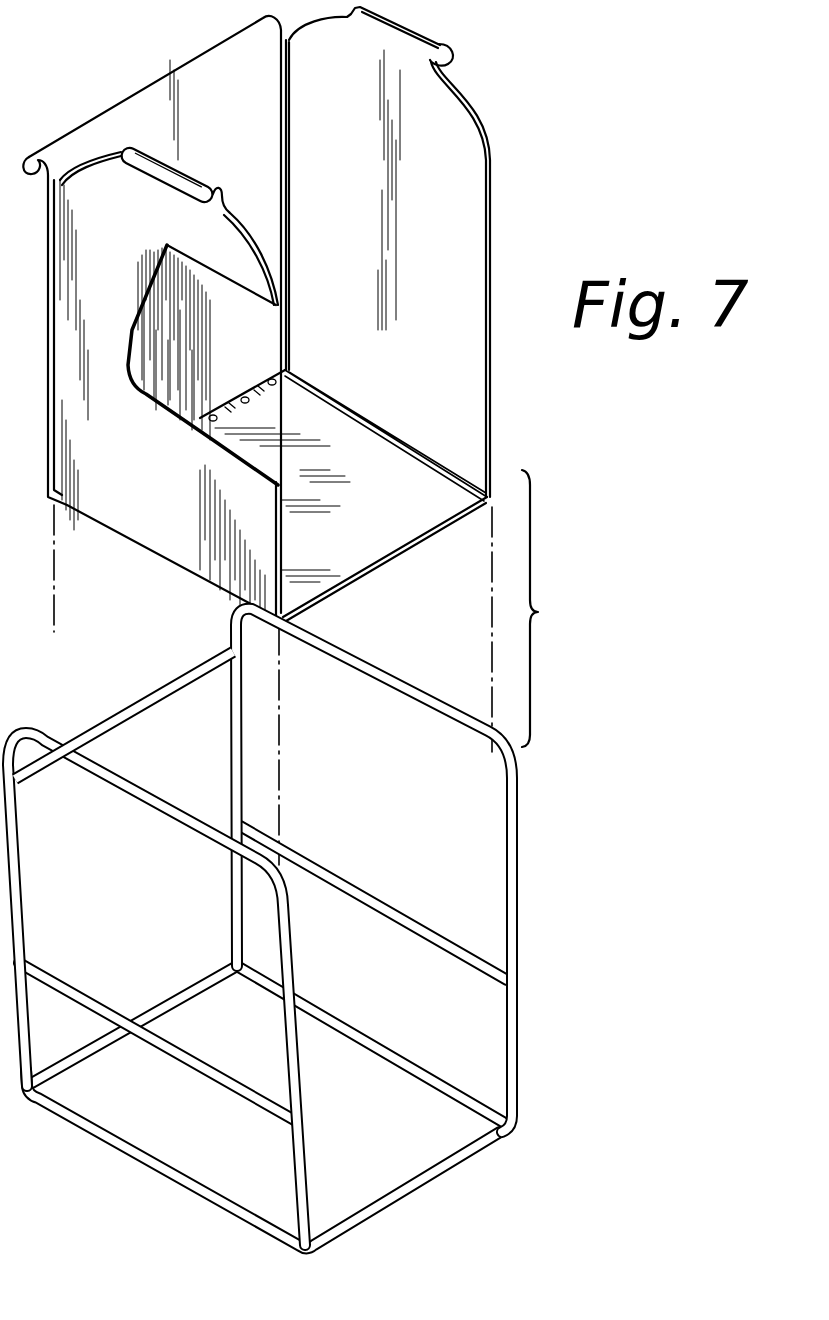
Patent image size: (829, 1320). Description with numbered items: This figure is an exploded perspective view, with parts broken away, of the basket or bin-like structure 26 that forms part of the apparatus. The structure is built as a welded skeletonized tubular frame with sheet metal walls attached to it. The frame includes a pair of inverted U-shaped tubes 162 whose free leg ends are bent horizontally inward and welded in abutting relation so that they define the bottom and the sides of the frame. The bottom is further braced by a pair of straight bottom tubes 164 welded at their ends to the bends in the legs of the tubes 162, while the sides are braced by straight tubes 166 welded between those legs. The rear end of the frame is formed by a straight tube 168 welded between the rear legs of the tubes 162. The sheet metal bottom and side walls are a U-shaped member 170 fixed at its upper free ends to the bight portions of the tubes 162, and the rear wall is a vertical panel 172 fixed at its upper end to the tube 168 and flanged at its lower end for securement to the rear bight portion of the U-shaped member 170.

The bin-like structure 26 is at (570, 594).
The inverted U-shaped tubes 162 is at (176, 815).
The straight bottom tubes 164 is at (345, 1035).
The straight tubes 166 is at (352, 882).
The straight tube 168 is at (147, 700).
The U-shaped member 170 is at (453, 282).
The vertical panel 172 is at (177, 72).